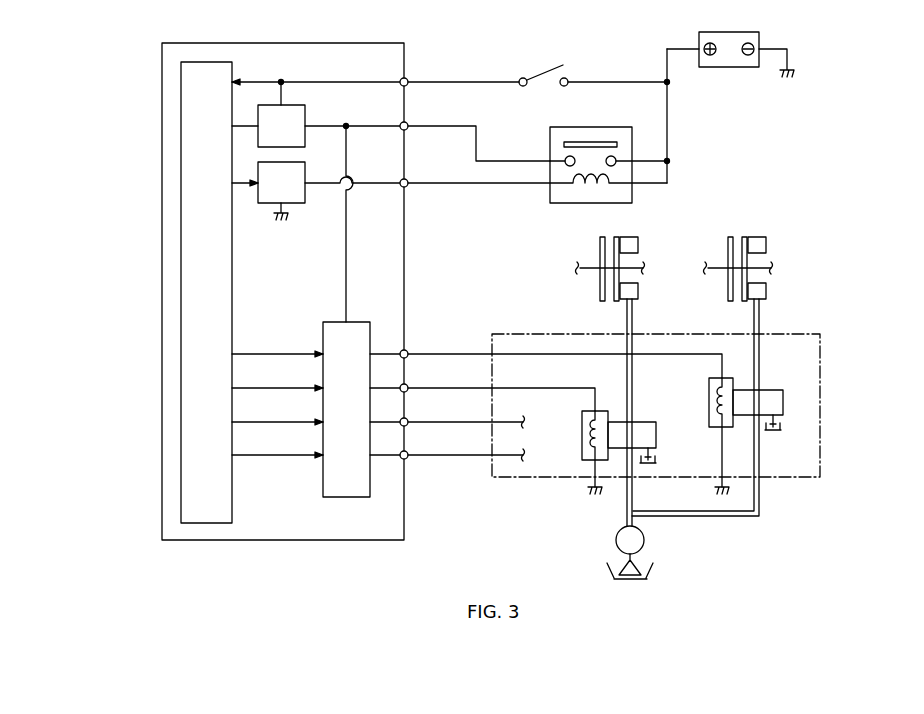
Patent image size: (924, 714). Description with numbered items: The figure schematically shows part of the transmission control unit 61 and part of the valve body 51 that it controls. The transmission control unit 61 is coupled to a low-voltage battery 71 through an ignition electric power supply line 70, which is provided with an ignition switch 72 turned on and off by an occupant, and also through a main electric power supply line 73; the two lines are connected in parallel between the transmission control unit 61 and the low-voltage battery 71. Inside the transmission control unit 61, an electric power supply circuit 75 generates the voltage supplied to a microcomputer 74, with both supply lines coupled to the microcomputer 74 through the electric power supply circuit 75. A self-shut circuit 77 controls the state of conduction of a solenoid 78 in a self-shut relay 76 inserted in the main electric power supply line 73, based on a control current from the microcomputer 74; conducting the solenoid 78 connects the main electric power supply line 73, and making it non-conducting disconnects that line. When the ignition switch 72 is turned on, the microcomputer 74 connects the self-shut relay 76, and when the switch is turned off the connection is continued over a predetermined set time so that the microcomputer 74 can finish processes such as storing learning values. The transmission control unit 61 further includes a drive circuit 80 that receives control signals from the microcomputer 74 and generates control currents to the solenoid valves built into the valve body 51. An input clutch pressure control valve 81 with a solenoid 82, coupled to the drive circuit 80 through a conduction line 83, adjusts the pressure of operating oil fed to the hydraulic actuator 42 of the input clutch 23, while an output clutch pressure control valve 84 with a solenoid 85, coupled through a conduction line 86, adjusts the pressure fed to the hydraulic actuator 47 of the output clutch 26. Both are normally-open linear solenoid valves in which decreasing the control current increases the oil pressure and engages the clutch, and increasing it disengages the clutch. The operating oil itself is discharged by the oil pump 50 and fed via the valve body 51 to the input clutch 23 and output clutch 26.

The input clutch 23 is at (648, 242).
The output clutch 26 is at (776, 242).
The hydraulic actuator 42 is at (640, 290).
The hydraulic actuator 47 is at (768, 290).
The oil pump 50 is at (616, 540).
The valve body 51 is at (826, 344).
The transmission control unit 61 is at (158, 85).
The ignition electric power supply line 70 is at (470, 81).
The low-voltage battery 71 is at (731, 68).
The ignition switch 72 is at (546, 58).
The main electric power supply line 73 is at (511, 159).
The microcomputer 74 is at (180, 213).
The electric power supply circuit 75 is at (306, 113).
The self-shut relay 76 is at (607, 138).
The self-shut circuit 77 is at (297, 205).
The solenoid 78 is at (578, 185).
The drive circuit 80 is at (323, 330).
The input clutch pressure control valve 81 is at (656, 436).
The solenoid 82 is at (595, 410).
The conduction line 83 is at (552, 389).
The output clutch pressure control valve 84 is at (775, 390).
The solenoid 85 is at (708, 391).
The conduction line 86 is at (448, 352).